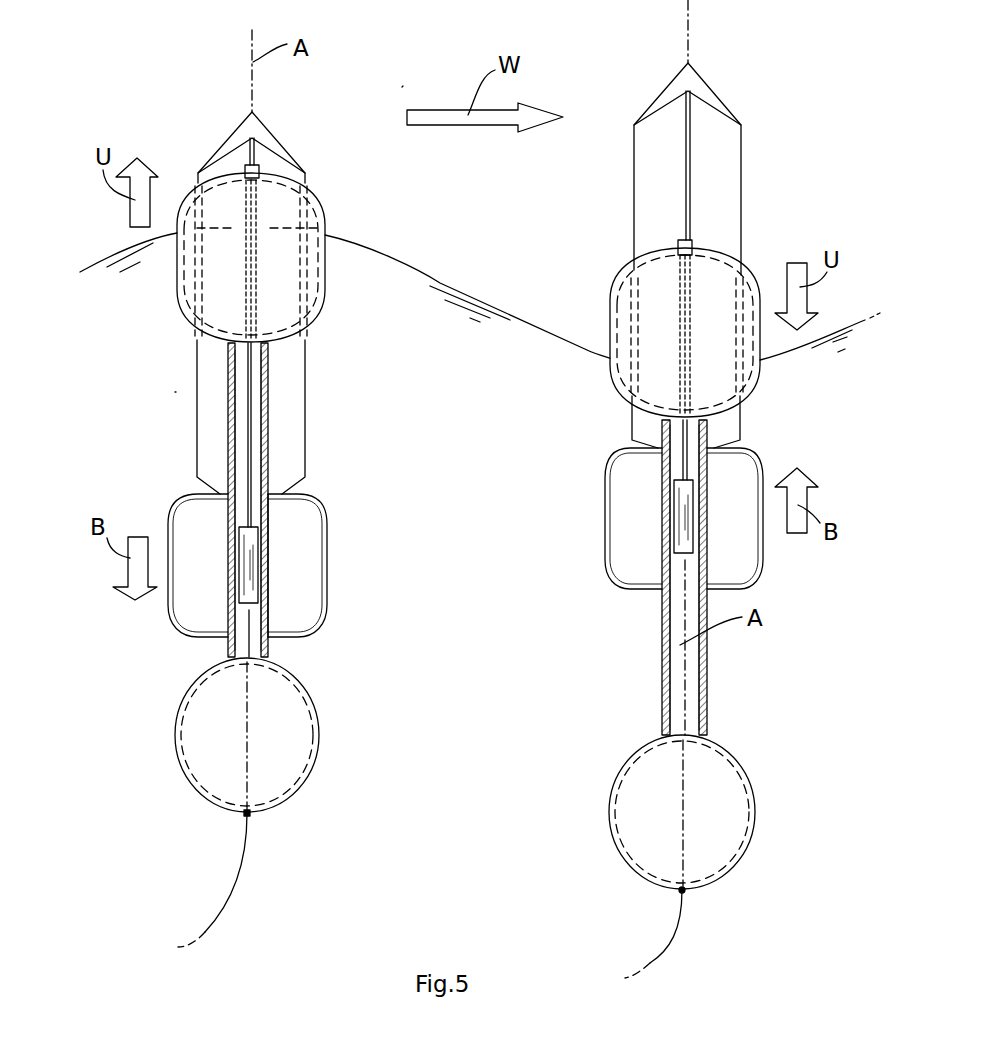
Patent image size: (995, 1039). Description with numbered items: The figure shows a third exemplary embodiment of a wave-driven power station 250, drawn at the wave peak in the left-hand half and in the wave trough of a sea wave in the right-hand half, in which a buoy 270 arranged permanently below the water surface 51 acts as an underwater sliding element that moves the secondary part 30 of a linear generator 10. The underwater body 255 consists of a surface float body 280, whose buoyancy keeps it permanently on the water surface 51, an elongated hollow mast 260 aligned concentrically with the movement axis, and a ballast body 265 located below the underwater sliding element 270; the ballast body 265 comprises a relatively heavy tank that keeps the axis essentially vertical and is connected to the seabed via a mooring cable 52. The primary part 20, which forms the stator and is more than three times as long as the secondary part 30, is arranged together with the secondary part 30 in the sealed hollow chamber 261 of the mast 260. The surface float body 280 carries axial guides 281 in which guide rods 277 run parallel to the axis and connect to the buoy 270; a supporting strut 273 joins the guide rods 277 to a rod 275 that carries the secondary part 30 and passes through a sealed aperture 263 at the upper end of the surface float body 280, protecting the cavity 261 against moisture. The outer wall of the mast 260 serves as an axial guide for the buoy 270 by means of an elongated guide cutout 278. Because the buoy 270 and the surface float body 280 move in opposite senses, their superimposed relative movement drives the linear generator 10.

The linear generator 10 is at (208, 610).
The primary part 20 is at (230, 445).
The secondary part 30 is at (247, 538).
The water surface 51 is at (480, 297).
The mooring cable 52 is at (230, 903).
The wave-driven power station 250 is at (402, 87).
The underwater body 255 is at (176, 392).
The mast 260 is at (273, 405).
The hollow chamber 261 is at (242, 400).
The aperture 263 is at (237, 167).
The ballast body 265 is at (190, 710).
The buoy 270 is at (188, 577).
The supporting strut 273 is at (237, 133).
The rod 275 is at (253, 163).
The guide rods 277 is at (197, 330).
The guide cutout 278 is at (277, 568).
The surface float body 280 is at (217, 197).
The axial guides 281 is at (193, 277).